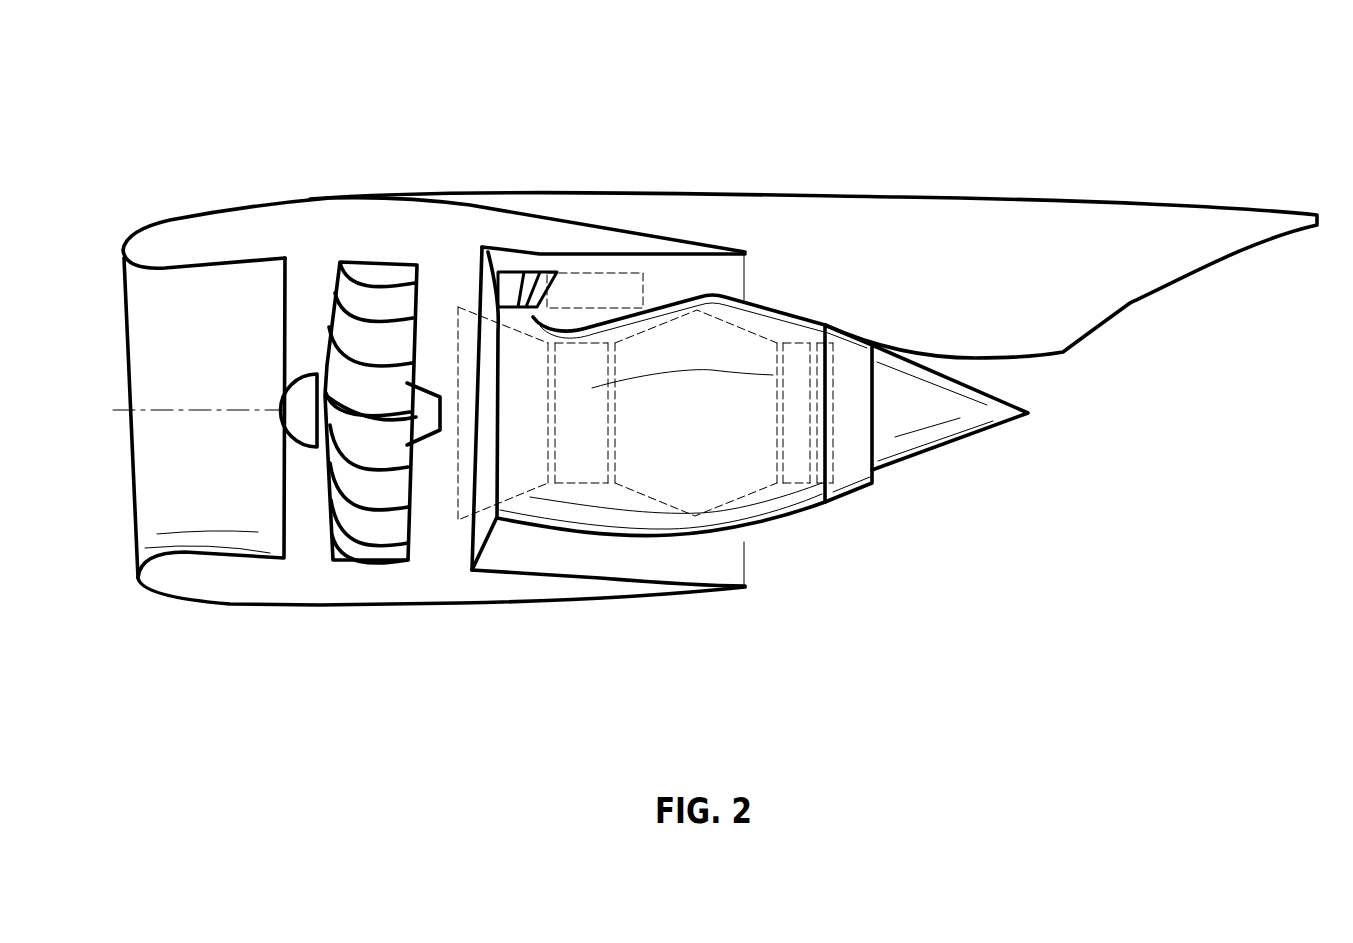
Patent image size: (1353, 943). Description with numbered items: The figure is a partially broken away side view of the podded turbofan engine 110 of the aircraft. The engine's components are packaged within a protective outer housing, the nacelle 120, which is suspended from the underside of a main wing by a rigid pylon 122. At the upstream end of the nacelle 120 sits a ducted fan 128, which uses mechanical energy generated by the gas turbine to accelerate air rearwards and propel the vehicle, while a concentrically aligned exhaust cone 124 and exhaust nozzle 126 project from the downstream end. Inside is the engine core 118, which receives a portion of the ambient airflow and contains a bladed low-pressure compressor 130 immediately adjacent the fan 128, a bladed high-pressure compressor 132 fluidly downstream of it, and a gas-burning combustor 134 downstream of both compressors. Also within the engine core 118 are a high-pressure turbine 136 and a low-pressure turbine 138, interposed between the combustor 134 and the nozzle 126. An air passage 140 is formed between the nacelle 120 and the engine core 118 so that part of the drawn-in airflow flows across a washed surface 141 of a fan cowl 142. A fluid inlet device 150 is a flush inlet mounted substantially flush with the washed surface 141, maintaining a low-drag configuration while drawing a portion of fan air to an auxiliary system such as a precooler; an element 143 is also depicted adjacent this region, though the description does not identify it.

The turbofan engine 110 is at (177, 125).
The engine core 118 is at (683, 537).
The nacelle 120 is at (233, 208).
The pylon 122 is at (947, 195).
The exhaust cone 124 is at (980, 432).
The exhaust nozzle 126 is at (874, 472).
The ducted fan 128 is at (361, 262).
The low-pressure compressor 130 is at (510, 510).
The high-pressure compressor 132 is at (598, 485).
The combustor 134 is at (750, 495).
The high-pressure turbine 136 is at (790, 495).
The low-pressure turbine 138 is at (823, 502).
The air passage 140 is at (745, 282).
The washed surface 141 is at (545, 270).
The fan cowl 142 is at (675, 252).
The accessory gearbox 143 is at (587, 272).
The fluid inlet device 150 is at (505, 268).